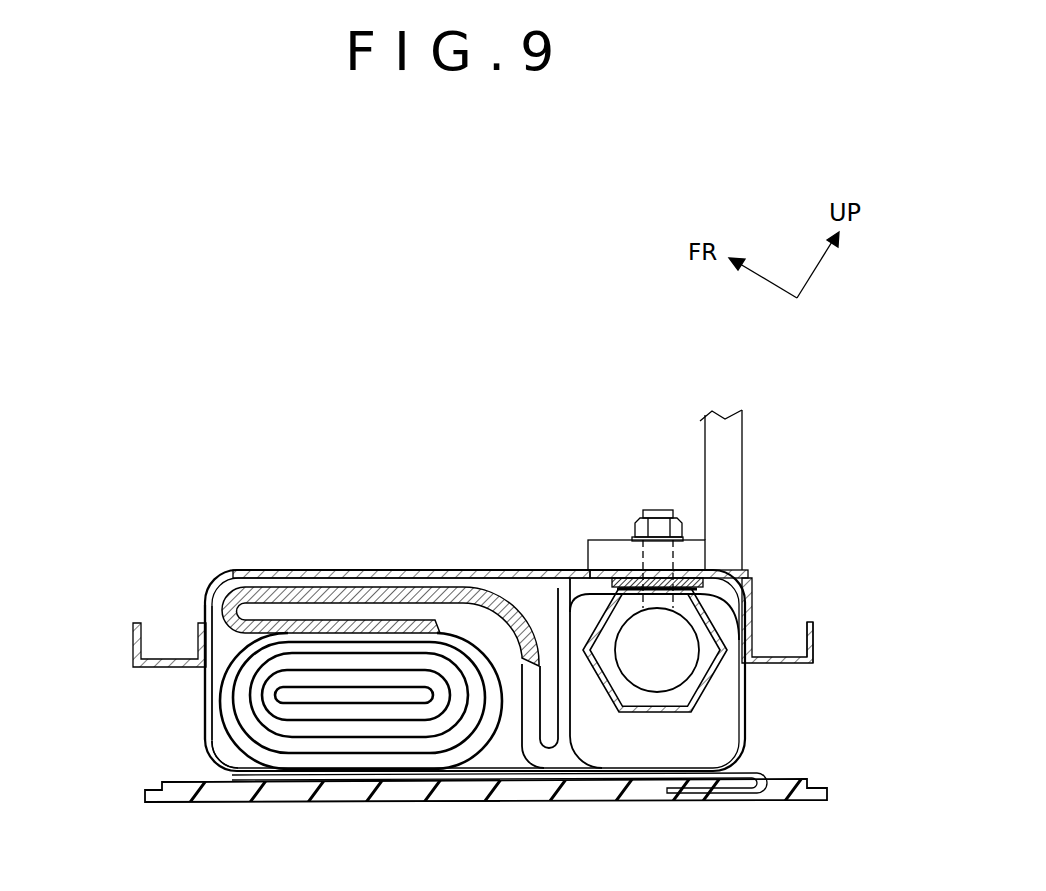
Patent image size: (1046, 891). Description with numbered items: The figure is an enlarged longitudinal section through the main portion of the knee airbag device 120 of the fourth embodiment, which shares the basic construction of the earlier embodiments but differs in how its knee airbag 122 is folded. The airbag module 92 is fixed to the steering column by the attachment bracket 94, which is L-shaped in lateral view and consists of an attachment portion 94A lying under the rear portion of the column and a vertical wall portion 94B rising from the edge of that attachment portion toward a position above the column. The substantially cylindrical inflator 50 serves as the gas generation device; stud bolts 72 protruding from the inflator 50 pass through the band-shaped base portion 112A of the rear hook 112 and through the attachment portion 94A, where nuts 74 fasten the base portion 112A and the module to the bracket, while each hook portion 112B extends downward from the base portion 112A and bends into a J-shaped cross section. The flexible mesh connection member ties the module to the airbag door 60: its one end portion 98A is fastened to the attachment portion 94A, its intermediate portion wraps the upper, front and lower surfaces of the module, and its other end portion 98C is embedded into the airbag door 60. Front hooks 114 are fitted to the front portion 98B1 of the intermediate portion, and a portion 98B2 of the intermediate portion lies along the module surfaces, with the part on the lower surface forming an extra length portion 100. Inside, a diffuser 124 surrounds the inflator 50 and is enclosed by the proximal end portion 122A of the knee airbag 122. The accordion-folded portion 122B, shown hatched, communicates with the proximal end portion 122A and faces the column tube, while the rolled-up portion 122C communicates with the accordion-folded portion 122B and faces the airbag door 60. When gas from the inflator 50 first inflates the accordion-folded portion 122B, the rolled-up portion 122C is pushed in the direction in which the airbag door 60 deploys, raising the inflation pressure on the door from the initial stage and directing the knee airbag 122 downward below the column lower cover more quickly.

The inflator 50 is at (683, 670).
The airbag door 60 is at (605, 803).
The stud bolt 72 is at (660, 508).
The nut 74 is at (683, 522).
The airbag module 92 is at (218, 563).
The attachment bracket 94 is at (707, 497).
The attachment portion 94A is at (603, 547).
The vertical wall portion 94B is at (728, 433).
The one end portion 98A is at (722, 597).
The front portion 98B1 is at (204, 733).
The intermediate portion section 98B2 is at (273, 570).
The other end portion 98C is at (713, 795).
The extra length portion 100 is at (398, 781).
The rear hook 112 is at (820, 640).
The base portion 112A is at (697, 563).
The hook portion 112B is at (815, 642).
The front hook 114 is at (132, 640).
The knee airbag device 120 is at (487, 822).
The knee airbag 122 is at (396, 668).
The proximal end portion 122A is at (560, 588).
The accordion-folded portion 122B is at (355, 585).
The rolled-up portion 122C is at (238, 762).
The diffuser 124 is at (620, 700).